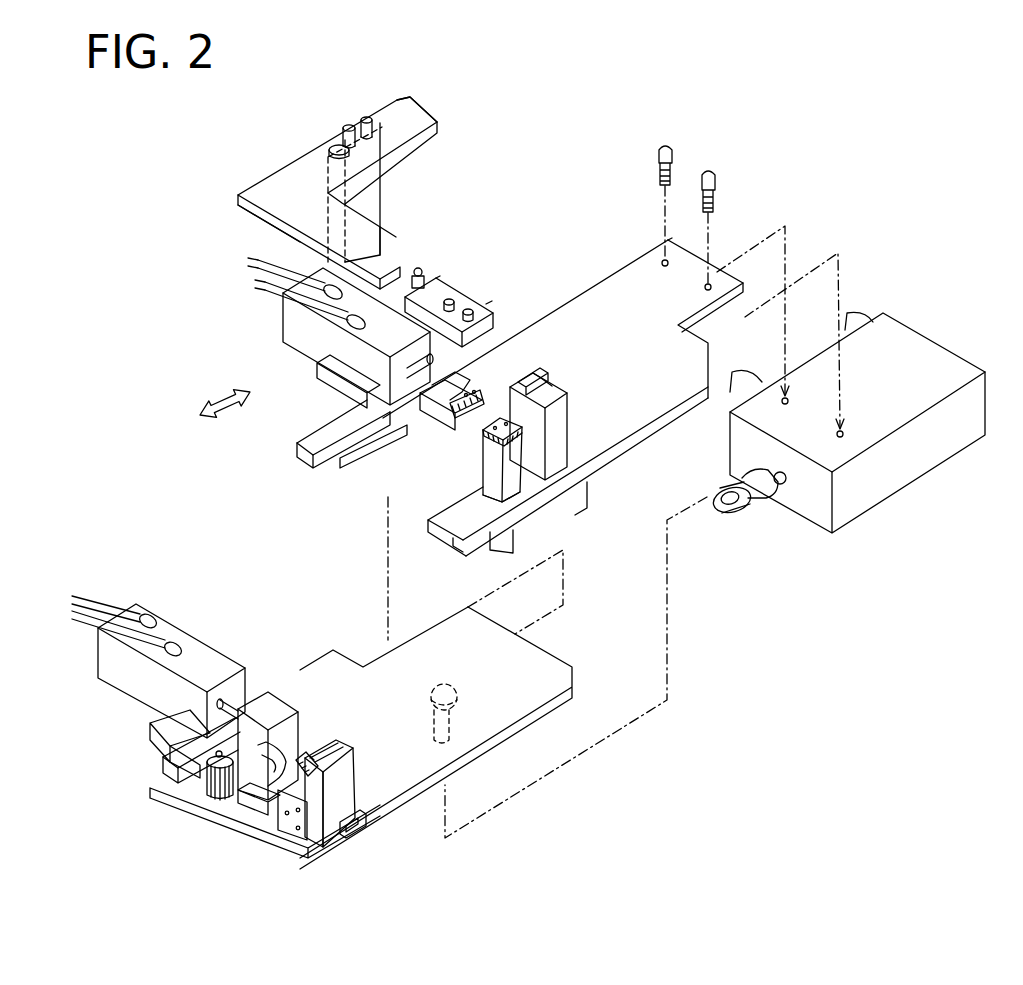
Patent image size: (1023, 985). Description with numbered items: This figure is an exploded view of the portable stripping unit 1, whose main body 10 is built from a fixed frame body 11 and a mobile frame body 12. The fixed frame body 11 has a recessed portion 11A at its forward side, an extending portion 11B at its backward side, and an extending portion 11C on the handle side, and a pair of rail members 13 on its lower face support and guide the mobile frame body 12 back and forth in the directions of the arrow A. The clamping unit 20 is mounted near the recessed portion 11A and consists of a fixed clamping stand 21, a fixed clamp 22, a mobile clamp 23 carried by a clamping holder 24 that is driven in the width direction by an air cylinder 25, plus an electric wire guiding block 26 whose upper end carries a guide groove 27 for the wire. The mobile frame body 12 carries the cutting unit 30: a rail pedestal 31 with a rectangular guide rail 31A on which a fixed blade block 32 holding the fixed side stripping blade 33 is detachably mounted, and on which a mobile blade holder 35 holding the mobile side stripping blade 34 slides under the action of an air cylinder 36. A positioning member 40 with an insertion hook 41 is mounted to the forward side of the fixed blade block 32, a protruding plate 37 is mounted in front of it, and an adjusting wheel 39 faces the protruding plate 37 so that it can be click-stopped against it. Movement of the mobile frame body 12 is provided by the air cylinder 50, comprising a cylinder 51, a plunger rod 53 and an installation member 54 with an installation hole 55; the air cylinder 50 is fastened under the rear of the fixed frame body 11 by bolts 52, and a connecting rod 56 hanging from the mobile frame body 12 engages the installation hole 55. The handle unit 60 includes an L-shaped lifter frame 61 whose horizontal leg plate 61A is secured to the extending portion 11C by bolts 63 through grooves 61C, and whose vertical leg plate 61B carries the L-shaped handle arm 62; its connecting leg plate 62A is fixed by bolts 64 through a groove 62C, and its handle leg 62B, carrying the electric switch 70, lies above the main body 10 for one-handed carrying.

The portable stripping unit 1 is at (208, 128).
The main body 10 is at (670, 239).
The fixed frame body 11 is at (613, 290).
The recessed portion 11A is at (420, 505).
The extending portion 11B is at (717, 273).
The extending portion 11C is at (492, 302).
The mobile frame body 12 is at (545, 660).
The rail members 13 is at (343, 460).
The clamping unit 20 is at (530, 482).
The fixed clamping stand 21 is at (513, 452).
The fixed clamp 22 is at (567, 410).
The mobile clamp 23 is at (470, 380).
The clamping holder 24 is at (420, 463).
The air cylinder 25 is at (293, 318).
The electric wire guiding block 26 is at (557, 387).
The guide groove 27 is at (552, 386).
The cutting unit 30 is at (358, 737).
The rail pedestal 31 is at (267, 818).
The rectangular guide rail 31A is at (345, 833).
The fixed blade block 32 is at (343, 790).
The fixed side stripping blade 33 is at (303, 760).
The mobile side stripping blade 34 is at (287, 760).
The mobile blade holder 35 is at (260, 700).
The air cylinder 36 is at (193, 643).
The protruding plate 37 is at (260, 798).
The adjusting wheel 39 is at (212, 790).
The positioning member 40 is at (333, 790).
The insertion hook 41 is at (287, 823).
The air cylinder 50 is at (910, 500).
The cylinder 51 is at (940, 452).
The bolts 52 is at (707, 168).
The plunger rod 53 is at (781, 482).
The installation member 54 is at (760, 505).
The installation hole 55 is at (713, 507).
The connecting rod 56 is at (448, 737).
The handle unit 60 is at (410, 203).
The lifter frame 61 is at (449, 312).
The horizontal leg plate 61A is at (447, 300).
The vertical leg plate 61B is at (370, 193).
The grooves 61C is at (425, 298).
The handle arm 62 is at (337, 193).
The connecting leg plate 62A is at (415, 118).
The handle leg 62B is at (273, 228).
The groove 62C is at (335, 150).
The bolts 63 is at (470, 312).
The bolts 64 is at (364, 122).
The electric switch 70 is at (397, 298).
The arrow A is at (235, 413).